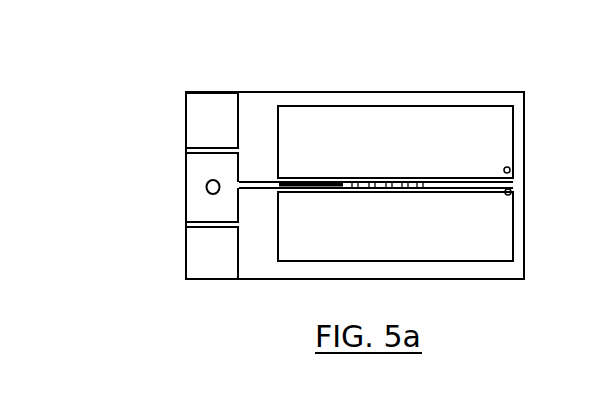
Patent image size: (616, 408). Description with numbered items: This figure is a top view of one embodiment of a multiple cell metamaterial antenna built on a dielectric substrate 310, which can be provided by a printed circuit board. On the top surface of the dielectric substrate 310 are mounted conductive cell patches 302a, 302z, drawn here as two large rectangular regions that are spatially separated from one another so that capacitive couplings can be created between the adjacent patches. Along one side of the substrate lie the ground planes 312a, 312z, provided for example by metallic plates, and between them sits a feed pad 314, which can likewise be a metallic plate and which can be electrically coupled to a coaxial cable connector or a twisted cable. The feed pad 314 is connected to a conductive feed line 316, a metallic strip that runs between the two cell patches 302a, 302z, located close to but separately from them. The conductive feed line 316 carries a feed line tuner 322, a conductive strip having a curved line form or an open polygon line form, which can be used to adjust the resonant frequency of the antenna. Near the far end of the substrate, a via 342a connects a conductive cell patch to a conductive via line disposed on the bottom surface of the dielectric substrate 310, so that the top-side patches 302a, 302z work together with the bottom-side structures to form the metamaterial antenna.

The dielectric substrate 310 is at (505, 100).
The conductive cell patch 302a is at (433, 130).
The conductive cell patch 302z is at (468, 213).
The ground plane 312a is at (207, 122).
The ground plane 312z is at (105, 102).
The feed pad 314 is at (227, 168).
The conductive feed line 316 is at (263, 184).
The feed line tuner 322 is at (403, 180).
The via 342a is at (508, 160).